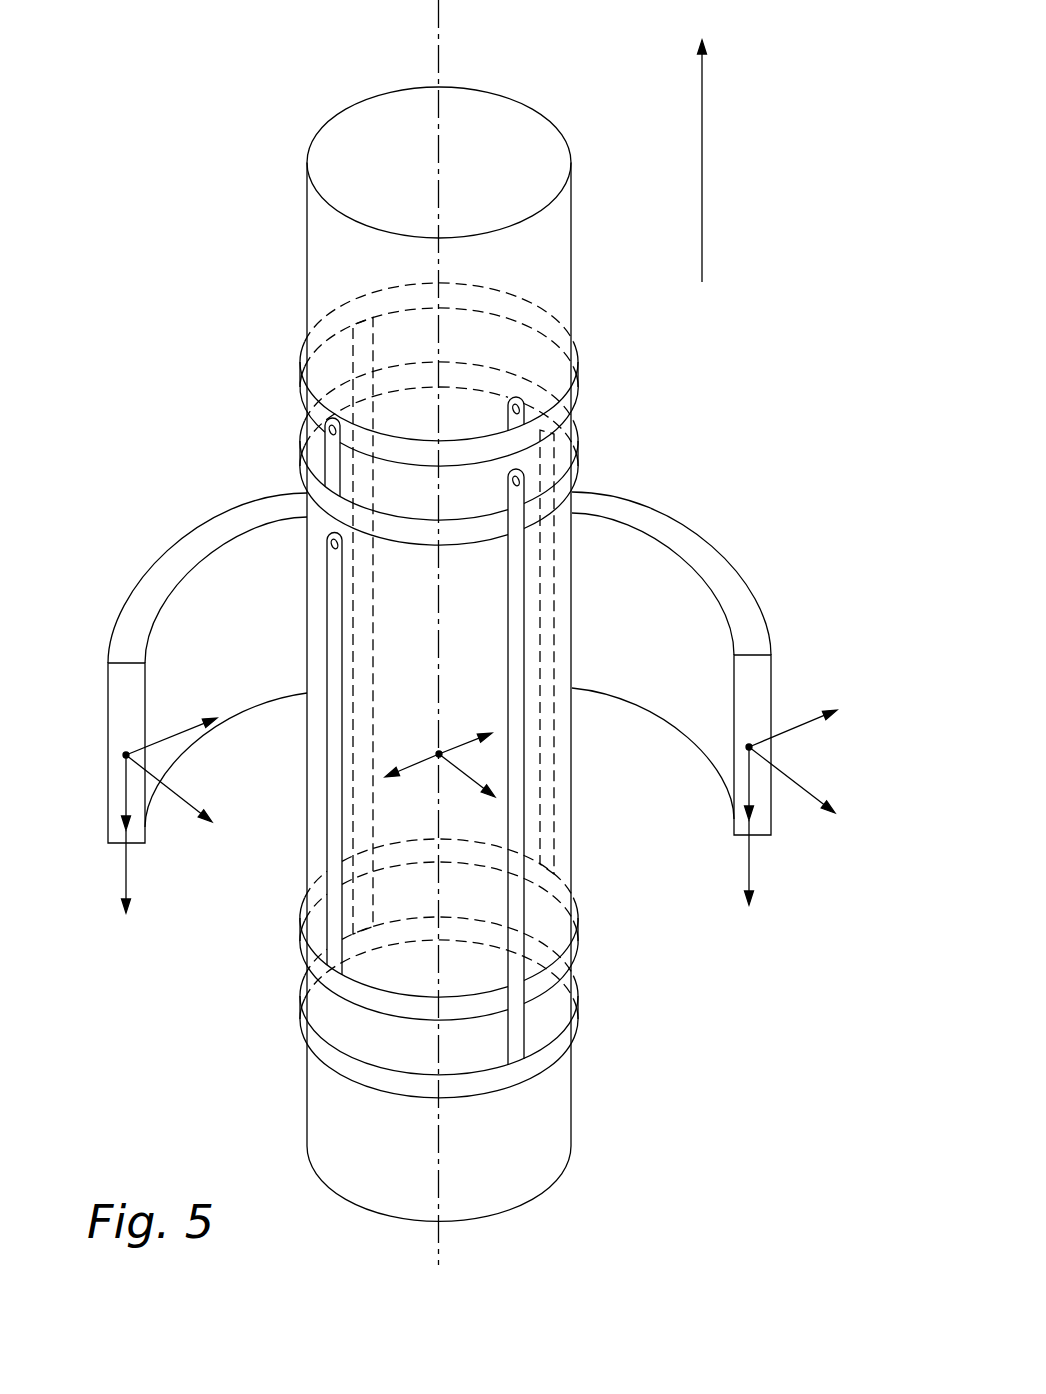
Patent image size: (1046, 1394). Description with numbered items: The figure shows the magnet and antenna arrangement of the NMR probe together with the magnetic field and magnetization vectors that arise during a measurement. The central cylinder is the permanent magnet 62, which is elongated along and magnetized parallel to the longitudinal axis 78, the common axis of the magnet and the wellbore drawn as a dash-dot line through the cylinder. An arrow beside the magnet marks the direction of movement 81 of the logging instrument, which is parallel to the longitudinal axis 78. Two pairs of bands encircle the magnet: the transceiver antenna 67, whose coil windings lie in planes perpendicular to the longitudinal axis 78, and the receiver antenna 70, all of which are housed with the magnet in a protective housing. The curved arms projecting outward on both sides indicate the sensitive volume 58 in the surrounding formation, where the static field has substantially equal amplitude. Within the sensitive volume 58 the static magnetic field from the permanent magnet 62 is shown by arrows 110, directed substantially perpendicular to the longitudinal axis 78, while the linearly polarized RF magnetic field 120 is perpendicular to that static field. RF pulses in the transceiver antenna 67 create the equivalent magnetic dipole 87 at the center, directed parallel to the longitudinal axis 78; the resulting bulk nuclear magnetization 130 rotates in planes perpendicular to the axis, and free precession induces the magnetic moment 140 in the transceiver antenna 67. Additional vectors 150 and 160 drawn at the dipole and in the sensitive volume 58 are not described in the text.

The longitudinal axis 78 is at (438, 30).
The direction of movement 81 is at (702, 162).
The permanent magnet 62 is at (560, 252).
The transceiver antenna 67 is at (578, 372).
The receiver antenna 70 is at (578, 468).
The sensitive volume 58 is at (107, 685).
The static magnetic field direction arrows 110 is at (123, 793).
The linearly polarized RF magnetic field 120 is at (165, 738).
The downward-outward force component 160 is at (175, 790).
The bulk nuclear magnetization arrows 130 is at (130, 880).
The lateral force component 150 is at (417, 760).
The RF equivalent magnetic dipole 87 is at (462, 743).
The induced magnetic moment arrows 140 is at (465, 777).